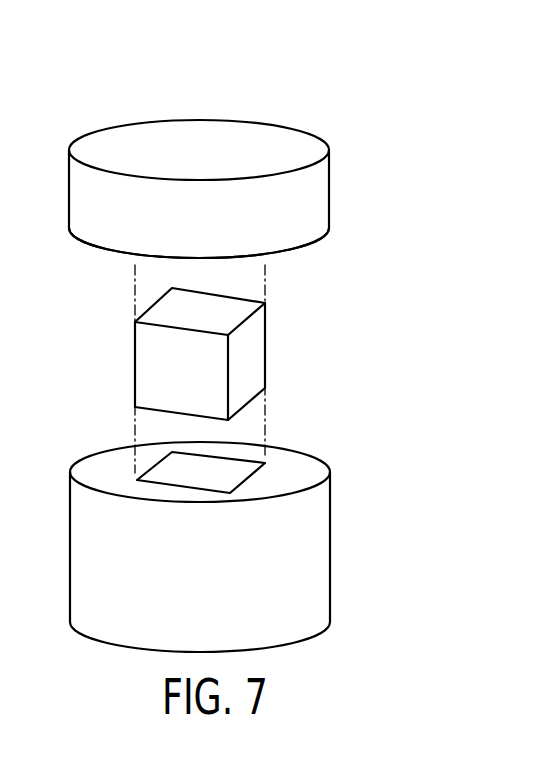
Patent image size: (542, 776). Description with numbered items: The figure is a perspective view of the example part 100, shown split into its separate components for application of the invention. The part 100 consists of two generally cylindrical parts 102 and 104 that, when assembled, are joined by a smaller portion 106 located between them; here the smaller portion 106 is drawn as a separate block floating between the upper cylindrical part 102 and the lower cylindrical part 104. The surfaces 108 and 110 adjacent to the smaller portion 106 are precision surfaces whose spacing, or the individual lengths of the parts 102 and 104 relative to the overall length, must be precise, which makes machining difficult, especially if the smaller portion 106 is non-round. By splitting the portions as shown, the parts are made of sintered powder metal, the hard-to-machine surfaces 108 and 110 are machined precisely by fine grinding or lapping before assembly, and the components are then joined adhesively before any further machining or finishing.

The example part 100 is at (136, 107).
The cylindrical part 102 is at (69, 190).
The cylindrical part 104 is at (70, 543).
The smaller portion 106 is at (263, 365).
The surface 108 is at (90, 467).
The surface 110 is at (88, 245).